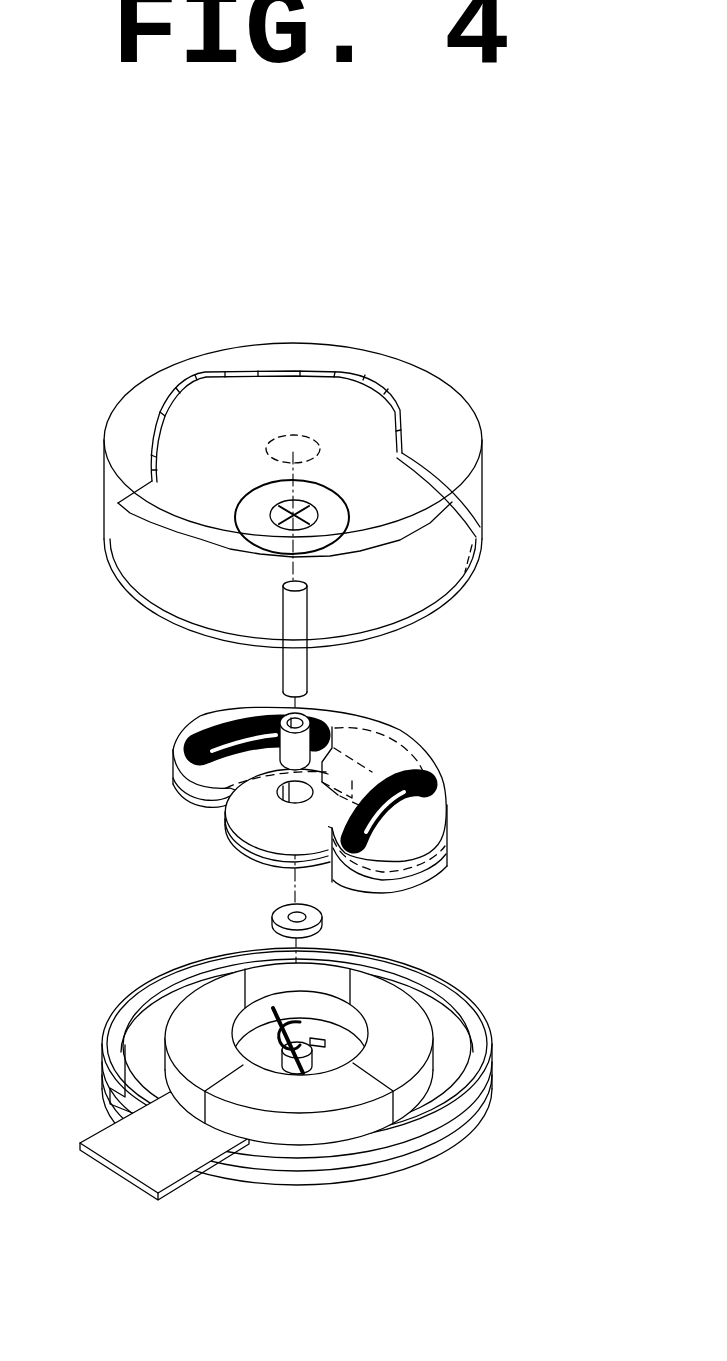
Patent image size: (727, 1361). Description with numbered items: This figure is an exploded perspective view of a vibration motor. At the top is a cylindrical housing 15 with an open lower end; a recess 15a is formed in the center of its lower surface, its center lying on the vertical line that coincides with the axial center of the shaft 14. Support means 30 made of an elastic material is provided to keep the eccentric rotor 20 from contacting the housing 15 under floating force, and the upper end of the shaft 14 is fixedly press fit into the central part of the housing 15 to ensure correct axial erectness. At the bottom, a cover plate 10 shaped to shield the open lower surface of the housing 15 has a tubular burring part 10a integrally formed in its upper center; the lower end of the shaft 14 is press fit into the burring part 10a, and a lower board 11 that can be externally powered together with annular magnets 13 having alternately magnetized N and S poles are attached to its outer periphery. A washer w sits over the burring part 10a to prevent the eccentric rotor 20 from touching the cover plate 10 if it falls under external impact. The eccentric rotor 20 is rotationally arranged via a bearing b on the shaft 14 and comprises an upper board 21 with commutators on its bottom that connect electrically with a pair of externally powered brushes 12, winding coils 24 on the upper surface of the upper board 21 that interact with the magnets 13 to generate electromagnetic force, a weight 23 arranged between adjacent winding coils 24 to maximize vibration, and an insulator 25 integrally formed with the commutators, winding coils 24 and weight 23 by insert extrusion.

The cylindrical housing 15 is at (462, 458).
The recess 15a is at (275, 458).
The support means 30 is at (313, 531).
The shaft 14 is at (292, 658).
The eccentric rotor 20 is at (334, 793).
The weight 23 is at (390, 763).
The winding coil 24 is at (437, 787).
The bearing b is at (175, 780).
The insulator 25 is at (265, 822).
The upper board 21 is at (253, 862).
The washer w is at (322, 913).
The cover plate 10 is at (487, 1067).
The tubular burring part 10a is at (350, 1047).
The annular magnets 13 is at (350, 1090).
The brushes 12 is at (273, 1008).
The lower board 11 is at (148, 1170).